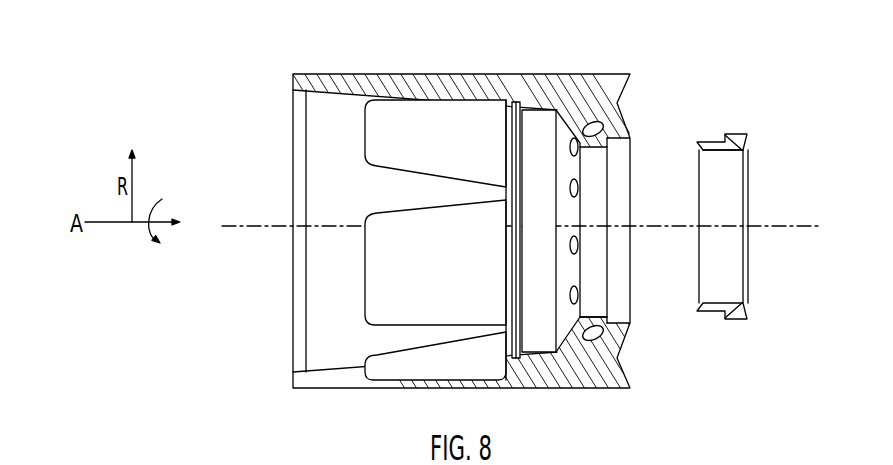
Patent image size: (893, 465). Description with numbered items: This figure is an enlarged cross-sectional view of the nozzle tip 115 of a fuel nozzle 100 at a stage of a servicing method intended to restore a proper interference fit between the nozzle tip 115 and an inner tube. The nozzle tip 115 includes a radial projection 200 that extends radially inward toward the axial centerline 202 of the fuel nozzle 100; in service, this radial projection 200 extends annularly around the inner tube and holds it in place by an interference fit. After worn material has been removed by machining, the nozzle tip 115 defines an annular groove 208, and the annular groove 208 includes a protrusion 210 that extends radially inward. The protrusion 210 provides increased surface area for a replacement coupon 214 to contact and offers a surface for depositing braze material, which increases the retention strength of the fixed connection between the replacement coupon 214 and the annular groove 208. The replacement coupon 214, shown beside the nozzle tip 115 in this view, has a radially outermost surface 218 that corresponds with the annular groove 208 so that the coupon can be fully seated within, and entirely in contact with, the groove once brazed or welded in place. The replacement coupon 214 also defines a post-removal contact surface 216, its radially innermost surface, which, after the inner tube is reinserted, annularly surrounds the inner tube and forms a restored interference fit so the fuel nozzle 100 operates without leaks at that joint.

The fuel nozzle 100 is at (300, 45).
The nozzle tip 115 is at (552, 380).
The radial projection 200 is at (617, 345).
The axial centerline 202 is at (243, 226).
The annular groove 208 is at (590, 146).
The protrusion 210 is at (593, 317).
The replacement coupon 214 is at (745, 313).
The post-removal contact surface 216 is at (728, 160).
The radially outermost surface 218 is at (708, 135).